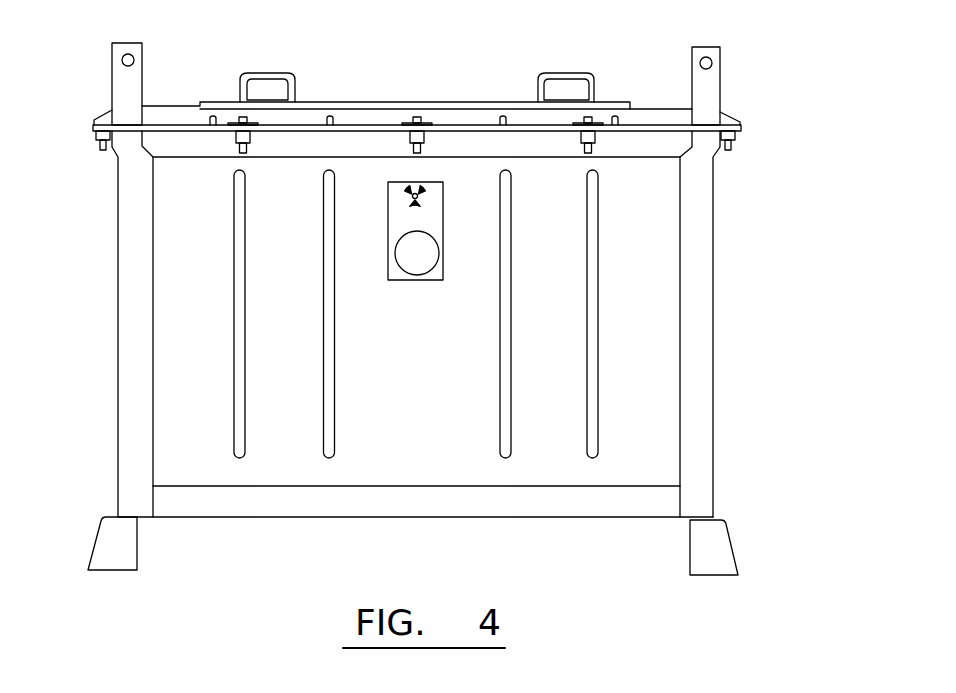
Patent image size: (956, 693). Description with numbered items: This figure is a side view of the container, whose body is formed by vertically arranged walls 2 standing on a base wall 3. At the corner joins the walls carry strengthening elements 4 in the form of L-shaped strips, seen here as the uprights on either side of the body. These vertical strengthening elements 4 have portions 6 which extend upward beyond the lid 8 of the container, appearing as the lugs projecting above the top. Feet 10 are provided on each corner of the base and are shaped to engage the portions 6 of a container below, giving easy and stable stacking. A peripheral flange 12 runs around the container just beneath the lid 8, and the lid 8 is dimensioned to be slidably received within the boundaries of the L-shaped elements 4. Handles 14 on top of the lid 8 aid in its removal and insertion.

The vertically arranged walls 2 is at (137, 327).
The base wall 3 is at (243, 517).
The strengthening elements 4 is at (702, 328).
The portions 6 is at (712, 100).
The lid 8 is at (458, 113).
The feet 10 is at (717, 550).
The peripheral flange 12 is at (742, 137).
The handles 14 is at (577, 72).